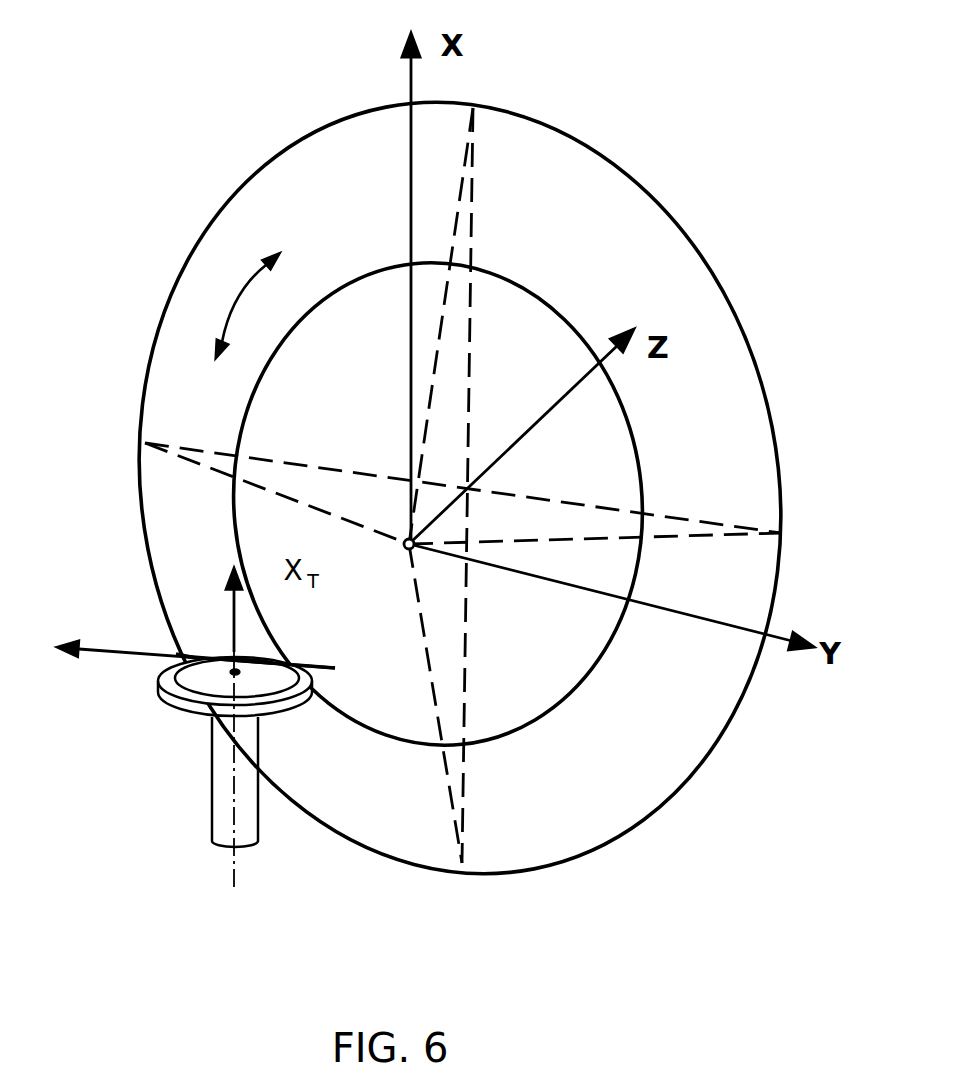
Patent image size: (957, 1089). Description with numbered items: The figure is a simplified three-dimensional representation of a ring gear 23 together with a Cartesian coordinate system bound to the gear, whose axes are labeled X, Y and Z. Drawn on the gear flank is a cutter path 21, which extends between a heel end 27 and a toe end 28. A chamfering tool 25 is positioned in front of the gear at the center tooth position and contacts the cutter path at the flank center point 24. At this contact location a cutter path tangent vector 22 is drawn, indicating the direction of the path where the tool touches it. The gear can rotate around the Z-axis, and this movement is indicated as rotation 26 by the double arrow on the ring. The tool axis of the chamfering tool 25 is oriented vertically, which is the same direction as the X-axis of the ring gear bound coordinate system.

The cutter path 21 is at (216, 727).
The cutter path tangent vector 22 is at (125, 657).
The ring gear 23 is at (748, 387).
The flank center point 24 is at (237, 654).
The chamfering tool 25 is at (177, 700).
The rotation 26 is at (238, 303).
The heel end 27 is at (183, 657).
The toe end 28 is at (283, 657).